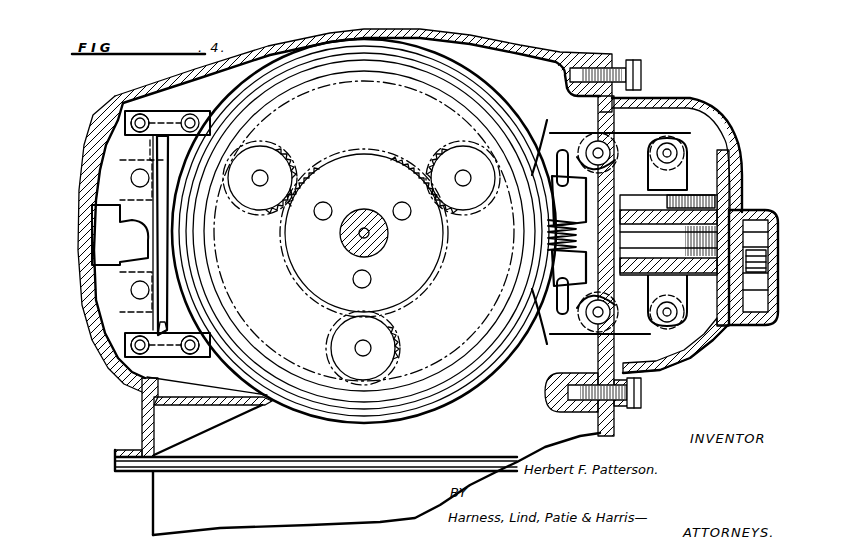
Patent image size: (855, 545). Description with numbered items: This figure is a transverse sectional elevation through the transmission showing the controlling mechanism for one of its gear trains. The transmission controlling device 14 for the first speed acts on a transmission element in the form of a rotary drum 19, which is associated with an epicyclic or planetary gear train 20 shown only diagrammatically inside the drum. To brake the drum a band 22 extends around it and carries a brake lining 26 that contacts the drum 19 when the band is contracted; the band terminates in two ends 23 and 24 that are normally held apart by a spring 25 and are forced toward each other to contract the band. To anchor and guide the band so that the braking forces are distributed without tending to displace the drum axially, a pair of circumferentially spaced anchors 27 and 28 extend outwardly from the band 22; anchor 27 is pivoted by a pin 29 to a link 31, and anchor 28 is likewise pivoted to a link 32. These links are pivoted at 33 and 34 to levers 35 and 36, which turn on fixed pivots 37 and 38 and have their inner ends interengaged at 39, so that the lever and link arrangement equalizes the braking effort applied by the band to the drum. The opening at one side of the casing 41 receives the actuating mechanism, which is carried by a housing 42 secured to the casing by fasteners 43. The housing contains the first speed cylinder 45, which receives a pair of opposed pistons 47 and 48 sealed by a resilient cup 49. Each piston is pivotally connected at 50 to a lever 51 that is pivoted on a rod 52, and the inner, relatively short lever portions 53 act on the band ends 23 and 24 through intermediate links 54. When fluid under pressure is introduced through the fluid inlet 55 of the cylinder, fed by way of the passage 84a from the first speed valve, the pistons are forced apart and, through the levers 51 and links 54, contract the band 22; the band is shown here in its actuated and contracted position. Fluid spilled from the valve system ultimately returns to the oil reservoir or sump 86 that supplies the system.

The transmission controlling device 14 is at (504, 90).
The rotary drum 19 is at (512, 222).
The planetary gear train 20 is at (332, 155).
The band 22 is at (430, 58).
The band end 23 is at (562, 225).
The band end 24 is at (569, 268).
The spring 25 is at (548, 225).
The brake lining 26 is at (330, 55).
The anchor 27 is at (212, 108).
The anchor 28 is at (215, 345).
The pin 29 is at (170, 140).
The link 31 is at (160, 112).
The link 32 is at (142, 384).
The pivot 33 is at (116, 97).
The pivot 34 is at (115, 360).
The lever 35 is at (150, 148).
The lever 36 is at (120, 345).
The fixed pivot 37 is at (131, 178).
The fixed pivot 38 is at (131, 290).
The interengagement 39 is at (118, 222).
The casing 41 is at (494, 48).
The housing 42 is at (688, 98).
The fasteners 43 is at (636, 60).
The cylinder 45 is at (678, 155).
The piston 47 is at (718, 198).
The piston 48 is at (690, 292).
The resilient cup 49 is at (628, 246).
The pivotal connection 50 is at (197, 340).
The lever 51 is at (636, 110).
The rod 52 is at (592, 138).
The lever portion 53 is at (547, 125).
The link 54 is at (562, 148).
The fluid inlet 55 is at (780, 238).
The passage 84a is at (768, 270).
The oil reservoir or sump 86 is at (318, 518).